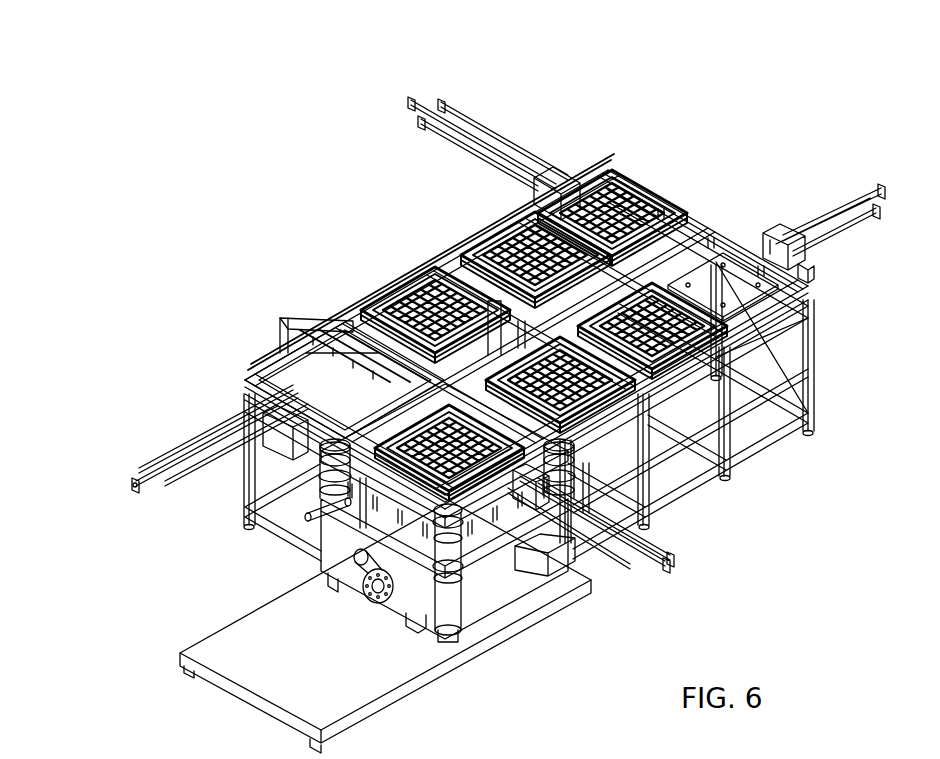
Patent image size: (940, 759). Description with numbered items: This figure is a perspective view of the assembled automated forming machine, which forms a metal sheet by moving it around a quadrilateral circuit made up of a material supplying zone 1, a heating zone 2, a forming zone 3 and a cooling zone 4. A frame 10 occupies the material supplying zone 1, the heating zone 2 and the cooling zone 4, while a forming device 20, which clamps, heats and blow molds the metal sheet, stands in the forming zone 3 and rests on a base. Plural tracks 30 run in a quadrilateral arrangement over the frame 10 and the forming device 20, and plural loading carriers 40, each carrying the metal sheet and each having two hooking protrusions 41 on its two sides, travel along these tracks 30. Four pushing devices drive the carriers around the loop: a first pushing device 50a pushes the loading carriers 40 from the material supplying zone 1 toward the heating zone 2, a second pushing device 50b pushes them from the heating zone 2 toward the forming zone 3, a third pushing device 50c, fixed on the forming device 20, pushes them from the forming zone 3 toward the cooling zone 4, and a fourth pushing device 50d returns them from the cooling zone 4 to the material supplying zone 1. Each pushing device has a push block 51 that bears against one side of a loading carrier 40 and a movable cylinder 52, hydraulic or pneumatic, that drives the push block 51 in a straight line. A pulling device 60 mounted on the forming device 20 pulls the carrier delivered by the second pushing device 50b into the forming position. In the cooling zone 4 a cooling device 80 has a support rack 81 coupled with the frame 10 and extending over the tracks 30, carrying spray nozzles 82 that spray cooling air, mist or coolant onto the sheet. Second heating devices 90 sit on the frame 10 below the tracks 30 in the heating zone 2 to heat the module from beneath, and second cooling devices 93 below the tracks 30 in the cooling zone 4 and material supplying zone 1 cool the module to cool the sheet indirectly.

The material supplying zone 1 is at (395, 192).
The heating zone 2 is at (578, 375).
The forming zone 3 is at (540, 645).
The cooling zone 4 is at (377, 268).
The frame 10 is at (832, 342).
The forming device 20 is at (352, 590).
The tracks 30 is at (237, 374).
The loading carriers 40 is at (617, 170).
The hooking protrusions 41 is at (360, 303).
The first pushing device 50a is at (511, 158).
The second pushing device 50b is at (770, 228).
The third pushing device 50c is at (640, 553).
The fourth pushing device 50d is at (213, 439).
The push block 51 is at (562, 180).
The movable cylinder 52 is at (505, 140).
The pulling device 60 is at (317, 467).
The cooling devices 80 is at (445, 247).
The support rack 81 is at (281, 309).
The spray nozzles 82 is at (290, 362).
The second heating devices 90 is at (800, 265).
The second cooling devices 93 is at (310, 397).